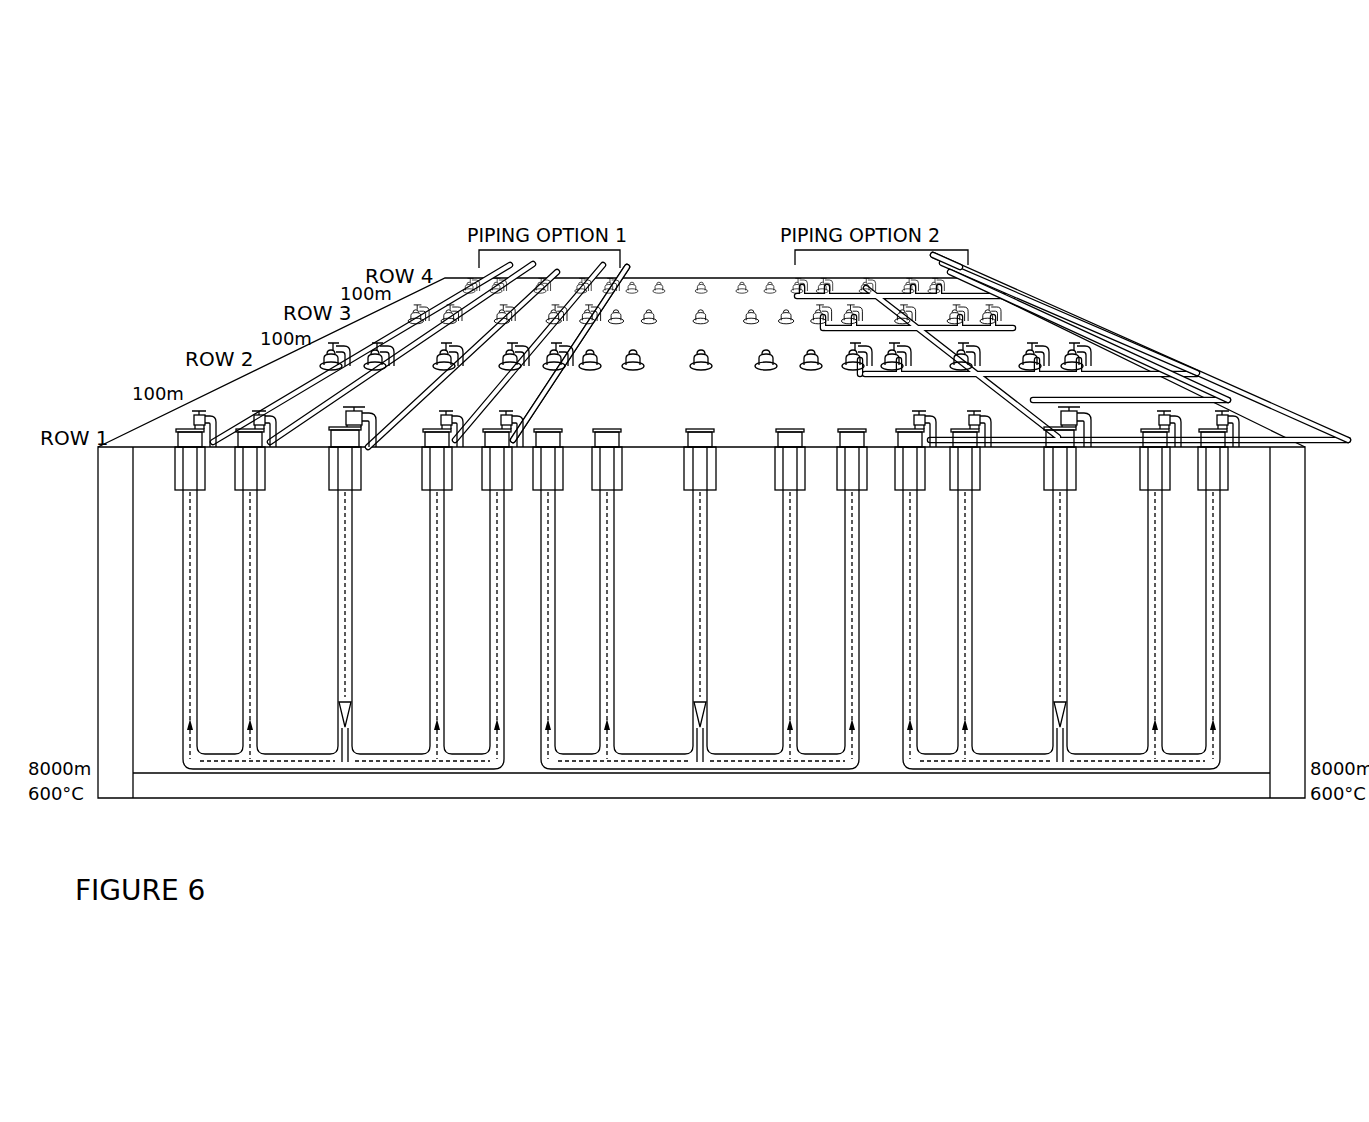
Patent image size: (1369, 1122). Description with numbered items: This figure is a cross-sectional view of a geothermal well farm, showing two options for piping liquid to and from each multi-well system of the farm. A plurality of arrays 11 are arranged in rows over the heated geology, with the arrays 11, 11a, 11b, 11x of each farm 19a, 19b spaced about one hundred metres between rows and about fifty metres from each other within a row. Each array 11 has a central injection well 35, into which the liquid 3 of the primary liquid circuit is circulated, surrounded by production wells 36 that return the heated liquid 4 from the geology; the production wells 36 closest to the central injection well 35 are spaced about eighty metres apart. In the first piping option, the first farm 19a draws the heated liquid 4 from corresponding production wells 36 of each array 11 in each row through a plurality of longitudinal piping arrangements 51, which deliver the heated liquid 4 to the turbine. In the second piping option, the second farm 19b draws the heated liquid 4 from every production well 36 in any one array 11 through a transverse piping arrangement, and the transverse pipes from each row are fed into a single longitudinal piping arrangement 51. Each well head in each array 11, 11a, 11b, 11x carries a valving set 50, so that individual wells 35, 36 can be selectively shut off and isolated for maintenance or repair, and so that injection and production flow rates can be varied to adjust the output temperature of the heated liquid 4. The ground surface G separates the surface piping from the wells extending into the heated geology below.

The liquid 3 is at (701, 479).
The heated liquid 4 is at (433, 305).
The ground surface G is at (720, 278).
The array 11 is at (1268, 372).
The array 11a is at (1160, 322).
The array 11b is at (1080, 280).
The array 11x is at (1000, 252).
The first farm 19a is at (509, 273).
The second farm 19b is at (1202, 162).
The central injection well 35 is at (337, 424).
The production well 36 is at (243, 436).
The valving set 50 is at (972, 417).
The longitudinal piping arrangement 51 is at (527, 418).